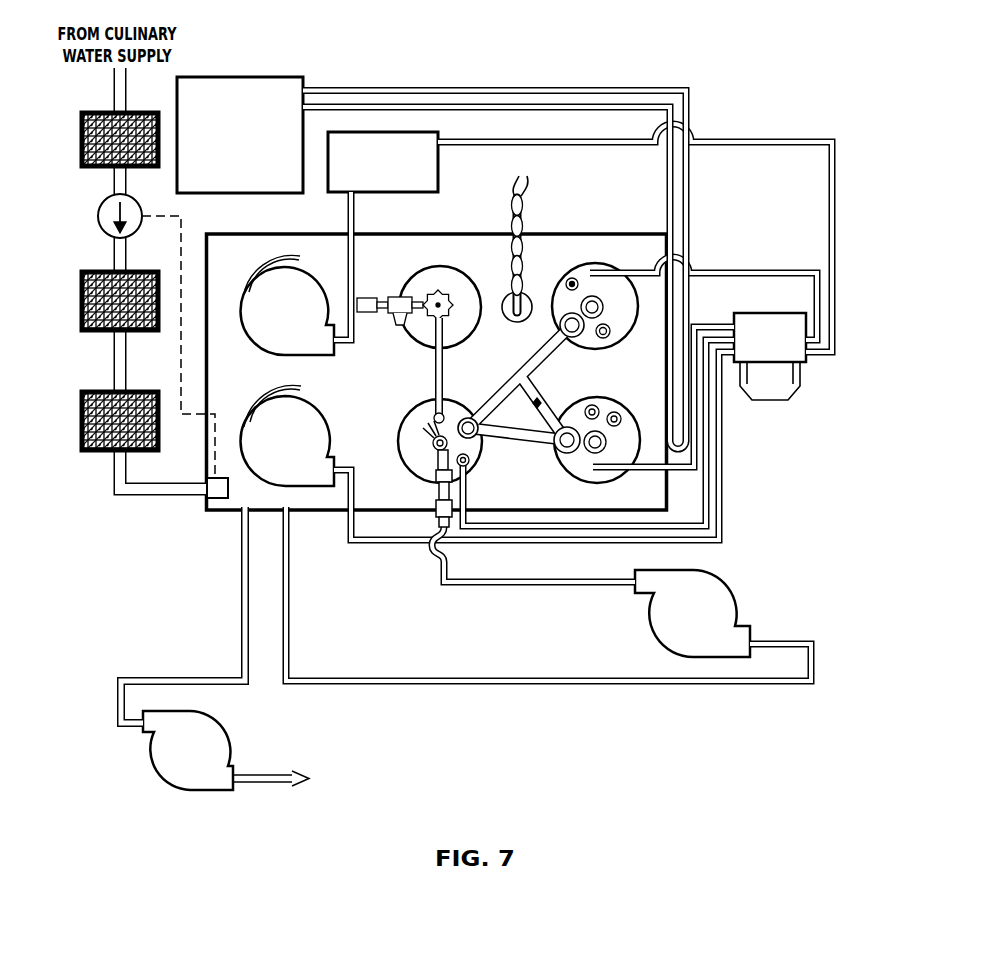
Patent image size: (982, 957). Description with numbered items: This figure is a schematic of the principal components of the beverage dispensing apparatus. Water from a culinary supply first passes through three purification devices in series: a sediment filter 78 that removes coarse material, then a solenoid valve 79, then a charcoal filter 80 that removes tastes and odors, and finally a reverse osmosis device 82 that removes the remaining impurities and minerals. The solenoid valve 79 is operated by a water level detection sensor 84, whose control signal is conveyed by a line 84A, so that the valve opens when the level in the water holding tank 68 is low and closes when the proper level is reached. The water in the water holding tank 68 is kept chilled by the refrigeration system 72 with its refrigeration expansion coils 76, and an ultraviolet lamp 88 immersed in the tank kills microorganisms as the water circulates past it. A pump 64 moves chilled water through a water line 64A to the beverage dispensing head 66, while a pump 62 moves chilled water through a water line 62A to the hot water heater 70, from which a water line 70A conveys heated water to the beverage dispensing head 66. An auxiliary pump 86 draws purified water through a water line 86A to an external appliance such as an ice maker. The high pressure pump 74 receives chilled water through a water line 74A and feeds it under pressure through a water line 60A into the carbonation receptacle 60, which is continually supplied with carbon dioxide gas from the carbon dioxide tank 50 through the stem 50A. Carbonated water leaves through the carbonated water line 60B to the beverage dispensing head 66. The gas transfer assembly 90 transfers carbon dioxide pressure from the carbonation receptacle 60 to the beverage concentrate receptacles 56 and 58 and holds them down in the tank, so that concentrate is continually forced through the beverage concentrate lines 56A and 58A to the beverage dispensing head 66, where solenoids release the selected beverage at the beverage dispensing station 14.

The beverage dispensing station 14 is at (772, 376).
The carbon dioxide tank 50 is at (434, 253).
The valve stem 50A is at (446, 376).
The beverage concentrate receptacle 56 is at (611, 258).
The beverage concentrate line 56A is at (784, 270).
The beverage concentrate receptacle 58 is at (600, 494).
The beverage concentrate line 58A is at (684, 474).
The carbonation receptacle 60 is at (404, 400).
The water line 60A is at (516, 590).
The carbonated water line 60B is at (504, 520).
The pump 62 is at (274, 322).
The water line 62A is at (355, 258).
The pump 64 is at (274, 452).
The water line 64A is at (386, 546).
The beverage dispensing head 66 is at (760, 344).
The water holding tank 68 is at (205, 266).
The hot water heater 70 is at (373, 171).
The water line 70A is at (549, 148).
The refrigeration system 72 is at (230, 137).
The high pressure pump 74 is at (683, 622).
The water line 74A is at (422, 676).
The refrigeration expansion coils 76 is at (690, 297).
The sediment filter 78 is at (80, 136).
The solenoid valve 79 is at (97, 218).
The charcoal filter 80 is at (80, 298).
The reverse osmosis device 82 is at (80, 420).
The water level detection sensor 84 is at (215, 492).
The line 84A is at (188, 418).
The auxiliary pump 86 is at (174, 761).
The water line 86A is at (240, 598).
The ultraviolet lamp 88 is at (506, 298).
The gas transfer assembly 90 is at (556, 377).